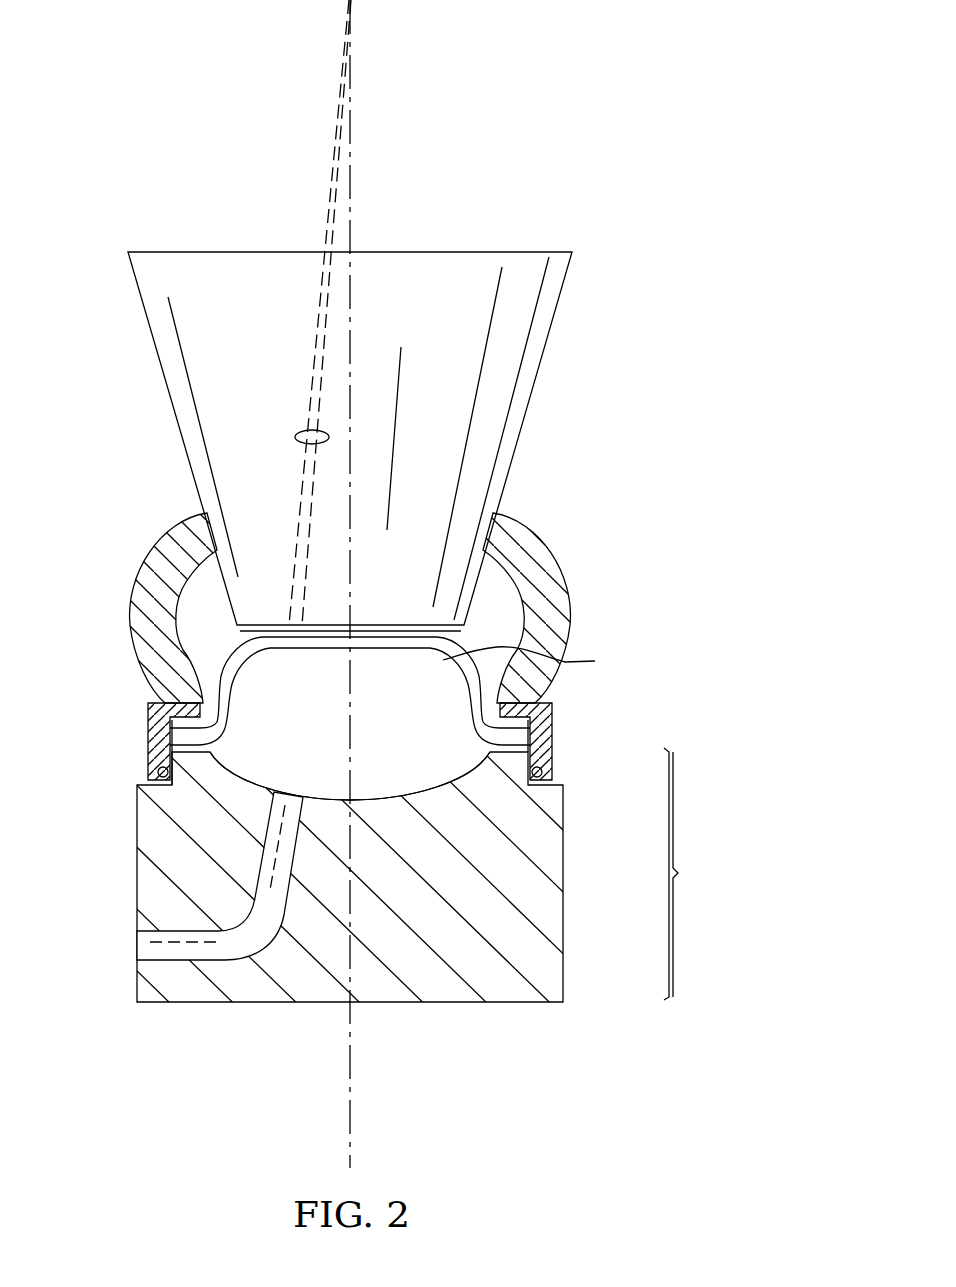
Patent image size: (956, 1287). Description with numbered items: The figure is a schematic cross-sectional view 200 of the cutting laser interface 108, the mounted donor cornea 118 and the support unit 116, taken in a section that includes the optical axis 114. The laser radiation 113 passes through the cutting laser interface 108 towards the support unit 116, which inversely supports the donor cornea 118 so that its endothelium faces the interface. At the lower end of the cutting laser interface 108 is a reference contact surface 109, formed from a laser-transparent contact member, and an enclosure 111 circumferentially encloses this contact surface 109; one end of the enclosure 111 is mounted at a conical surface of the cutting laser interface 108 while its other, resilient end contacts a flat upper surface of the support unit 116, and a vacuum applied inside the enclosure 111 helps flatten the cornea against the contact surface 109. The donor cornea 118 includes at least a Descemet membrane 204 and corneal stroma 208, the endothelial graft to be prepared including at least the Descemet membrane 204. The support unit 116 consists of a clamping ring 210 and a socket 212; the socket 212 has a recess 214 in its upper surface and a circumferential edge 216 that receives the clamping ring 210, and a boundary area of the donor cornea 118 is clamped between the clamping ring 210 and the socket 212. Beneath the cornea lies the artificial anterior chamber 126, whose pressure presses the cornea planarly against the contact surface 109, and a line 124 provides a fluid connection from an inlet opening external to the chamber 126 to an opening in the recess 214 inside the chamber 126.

The cross-sectional view 200 is at (448, 147).
The cutting laser interface 108 is at (232, 253).
The laser radiation 113 is at (300, 437).
The enclosure 111 is at (557, 565).
The donor cornea 118 is at (472, 638).
The reference contact surface 109 is at (237, 626).
The Descemet membrane 204 is at (545, 658).
The corneal stroma 208 is at (243, 660).
The clamping ring 210 is at (550, 742).
The circumferential edge 216 is at (535, 778).
The recess 214 is at (391, 798).
The socket 212 is at (555, 918).
The support unit 116 is at (700, 874).
The artificial anterior chamber 126 is at (254, 756).
The line 124 is at (133, 941).
The optical axis 114 is at (352, 1090).